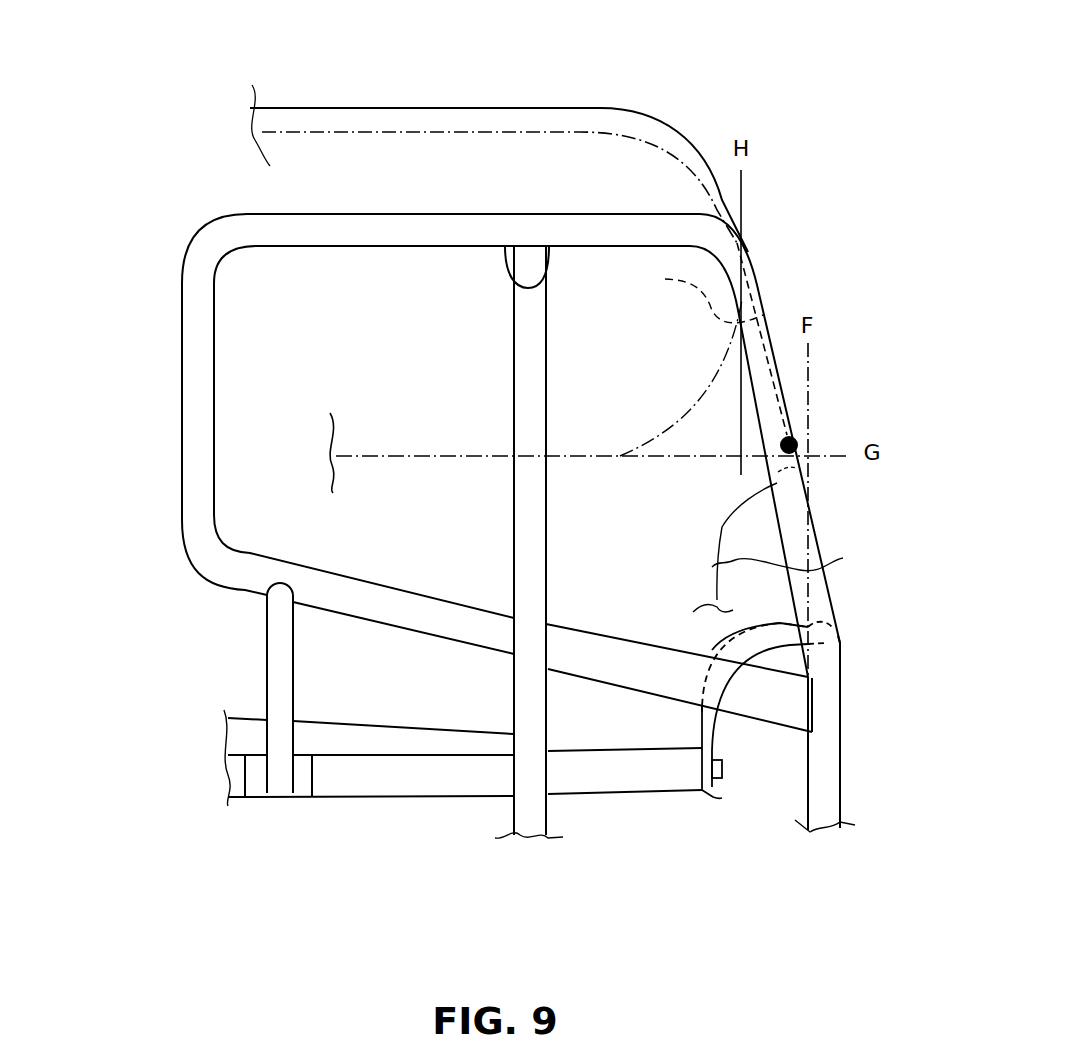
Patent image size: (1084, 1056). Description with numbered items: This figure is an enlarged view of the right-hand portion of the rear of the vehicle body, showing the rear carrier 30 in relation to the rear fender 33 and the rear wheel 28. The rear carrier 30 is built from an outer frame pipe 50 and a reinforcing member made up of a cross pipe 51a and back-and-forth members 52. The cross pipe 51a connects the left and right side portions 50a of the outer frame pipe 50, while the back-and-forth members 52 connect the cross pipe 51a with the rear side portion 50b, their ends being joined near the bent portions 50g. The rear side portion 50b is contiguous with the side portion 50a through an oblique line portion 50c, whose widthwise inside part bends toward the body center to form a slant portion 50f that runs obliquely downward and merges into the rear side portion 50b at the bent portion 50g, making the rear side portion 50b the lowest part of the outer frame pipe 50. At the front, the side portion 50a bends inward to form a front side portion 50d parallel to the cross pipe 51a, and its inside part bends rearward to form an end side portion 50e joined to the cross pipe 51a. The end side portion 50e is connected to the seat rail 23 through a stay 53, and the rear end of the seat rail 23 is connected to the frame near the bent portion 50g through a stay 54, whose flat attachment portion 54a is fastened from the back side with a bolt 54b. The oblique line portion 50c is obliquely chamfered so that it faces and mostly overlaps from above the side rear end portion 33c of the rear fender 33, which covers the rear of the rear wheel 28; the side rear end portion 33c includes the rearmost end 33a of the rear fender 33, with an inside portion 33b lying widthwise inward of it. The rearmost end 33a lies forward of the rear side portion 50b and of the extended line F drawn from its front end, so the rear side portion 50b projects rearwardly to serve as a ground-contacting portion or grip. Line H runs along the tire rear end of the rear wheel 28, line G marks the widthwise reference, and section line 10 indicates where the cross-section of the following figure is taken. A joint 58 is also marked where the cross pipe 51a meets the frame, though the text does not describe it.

The section line 10- 10 is at (168, 297).
The seat rail 23 is at (392, 770).
The rear wheel 28 is at (303, 128).
The rear carrier 30 is at (222, 170).
The rear fender 33 is at (381, 84).
The rearmost end 33a is at (794, 437).
The inside portion 33b is at (788, 547).
The side rear end portion 33c is at (691, 362).
The outer frame pipe 50 is at (461, 178).
The side portion 50a is at (312, 242).
The rear side portion 50b is at (833, 778).
The oblique line portion 50c is at (760, 372).
The front side portion 50d is at (213, 377).
The end side portion 50e is at (385, 600).
The slant portion 50f is at (822, 542).
The bent portion 50g is at (840, 645).
The cross pipe 51a is at (522, 425).
The back-and-forth member 52 is at (623, 640).
The stay 53 is at (277, 645).
The stay 54 is at (752, 627).
The attachment portion 54a is at (710, 791).
The bolt 54b is at (723, 770).
The welded joint portion 58 is at (528, 258).